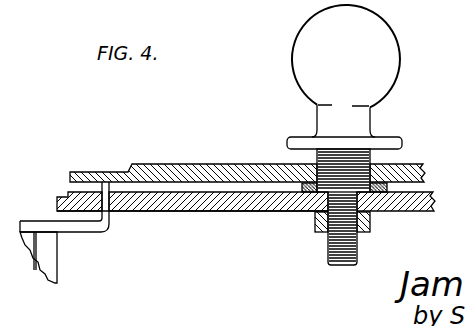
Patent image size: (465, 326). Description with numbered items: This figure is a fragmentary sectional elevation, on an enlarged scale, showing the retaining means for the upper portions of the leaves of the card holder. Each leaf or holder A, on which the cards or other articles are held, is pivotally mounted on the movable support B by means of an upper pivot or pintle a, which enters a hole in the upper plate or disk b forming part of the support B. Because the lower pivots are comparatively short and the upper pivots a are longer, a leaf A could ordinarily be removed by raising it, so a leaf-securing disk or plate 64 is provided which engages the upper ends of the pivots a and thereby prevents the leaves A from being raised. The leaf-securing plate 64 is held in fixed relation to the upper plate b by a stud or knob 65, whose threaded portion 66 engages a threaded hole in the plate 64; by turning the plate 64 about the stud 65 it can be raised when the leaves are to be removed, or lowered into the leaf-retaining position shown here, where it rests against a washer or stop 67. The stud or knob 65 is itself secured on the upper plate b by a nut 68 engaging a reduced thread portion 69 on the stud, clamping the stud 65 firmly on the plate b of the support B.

The leaf-securing disk or plate 64 is at (200, 162).
The stud or knob 65 is at (346, 71).
The threaded portion 66 is at (312, 156).
The washer or stop 67 is at (395, 166).
The nut 68 is at (371, 227).
The reduced thread portion 69 is at (330, 254).
The upper pivot or pintle a is at (109, 222).
The upper plate or disk b is at (259, 212).
The leaf or holder A is at (50, 262).
The support B is at (246, 221).